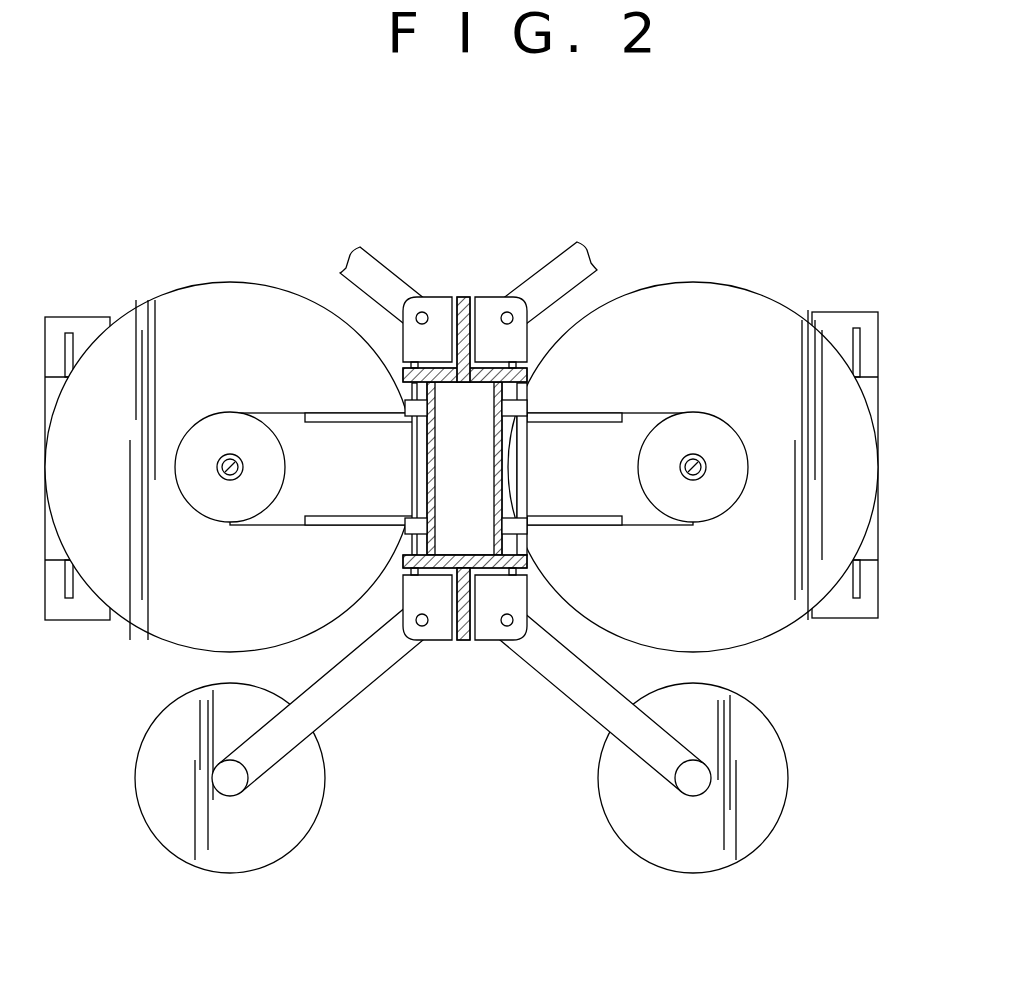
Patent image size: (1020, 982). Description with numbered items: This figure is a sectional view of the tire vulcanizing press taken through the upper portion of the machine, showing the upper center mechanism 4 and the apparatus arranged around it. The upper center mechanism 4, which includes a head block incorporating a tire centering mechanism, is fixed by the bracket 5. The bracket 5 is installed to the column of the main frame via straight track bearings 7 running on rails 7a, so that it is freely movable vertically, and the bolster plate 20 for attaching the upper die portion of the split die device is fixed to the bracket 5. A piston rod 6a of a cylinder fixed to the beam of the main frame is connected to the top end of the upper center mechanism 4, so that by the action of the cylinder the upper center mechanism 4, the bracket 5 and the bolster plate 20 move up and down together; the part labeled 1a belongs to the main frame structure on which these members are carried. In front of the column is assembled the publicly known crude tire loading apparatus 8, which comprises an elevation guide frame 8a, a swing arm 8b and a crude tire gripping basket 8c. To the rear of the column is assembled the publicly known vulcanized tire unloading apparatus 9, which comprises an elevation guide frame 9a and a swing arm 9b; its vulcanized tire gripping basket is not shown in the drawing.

The side mount bracket 1a is at (880, 400).
The bolster plate 20 is at (820, 570).
The upper center mechanism 4 is at (718, 500).
The bracket 5 is at (625, 450).
The piston rod 6a is at (692, 482).
The straight track bearings 7 is at (540, 400).
The rails 7a is at (527, 378).
The crude tire loading apparatus 8 is at (400, 705).
The elevation guide frame 8a is at (466, 640).
The swing arm 8b is at (560, 697).
The crude tire gripping basket 8c is at (620, 797).
The vulcanized tire unloading apparatus 9 is at (430, 272).
The elevation guide frame 9a is at (465, 297).
The swing arm 9b is at (548, 275).